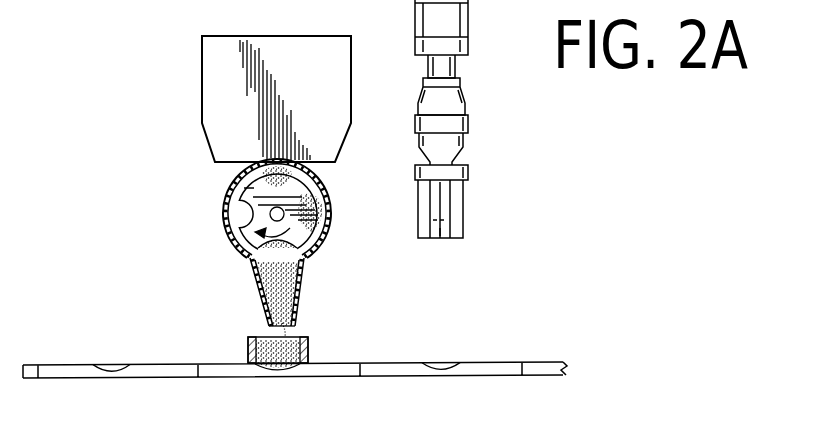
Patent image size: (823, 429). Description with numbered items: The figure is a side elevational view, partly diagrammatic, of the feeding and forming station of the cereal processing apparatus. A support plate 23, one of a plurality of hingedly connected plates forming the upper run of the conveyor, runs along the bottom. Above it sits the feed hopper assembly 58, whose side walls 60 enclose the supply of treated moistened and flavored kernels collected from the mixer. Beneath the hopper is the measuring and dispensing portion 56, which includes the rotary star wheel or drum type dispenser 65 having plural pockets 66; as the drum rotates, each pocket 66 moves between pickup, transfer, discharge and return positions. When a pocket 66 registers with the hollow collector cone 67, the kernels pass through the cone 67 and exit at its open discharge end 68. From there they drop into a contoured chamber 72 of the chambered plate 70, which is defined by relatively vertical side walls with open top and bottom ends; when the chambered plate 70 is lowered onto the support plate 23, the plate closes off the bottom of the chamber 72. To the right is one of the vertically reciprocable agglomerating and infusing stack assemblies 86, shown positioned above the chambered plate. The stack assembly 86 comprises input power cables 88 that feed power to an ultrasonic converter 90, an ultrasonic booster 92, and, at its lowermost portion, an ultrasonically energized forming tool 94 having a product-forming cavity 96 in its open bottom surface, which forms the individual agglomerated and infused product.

The support plate 23 is at (393, 368).
The measuring and dispensing portion 56 is at (229, 183).
The feed hopper assembly 58 is at (202, 68).
The side walls 60 is at (230, 92).
The rotary star wheel or drum type dispenser 65 is at (302, 237).
The pocket 66 is at (243, 210).
The hollow collector cone 67 is at (257, 280).
The open discharge end 68 is at (290, 328).
The chambered plate 70 is at (311, 351).
The contoured chamber 72 is at (262, 343).
The agglomerating and infusing stack assembly 86 is at (475, 168).
The input power cables 88 is at (412, 135).
The ultrasonic converter 90 is at (462, 30).
The ultrasonic booster 92 is at (465, 110).
The ultrasonically energized forming tool 94 is at (463, 198).
The product-forming cavity 96 is at (440, 240).